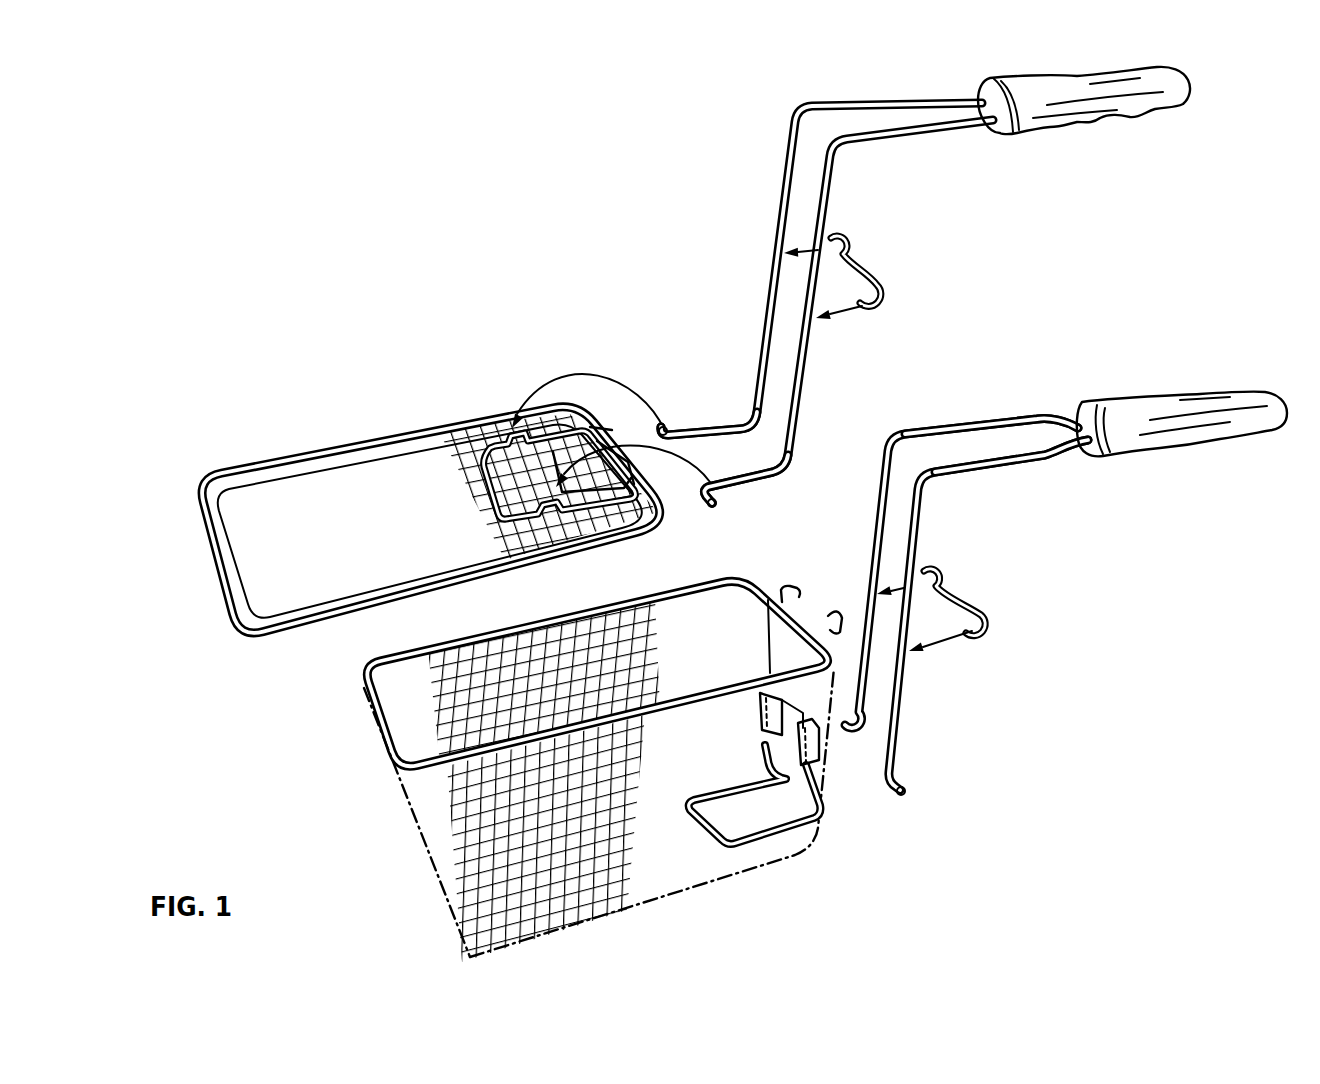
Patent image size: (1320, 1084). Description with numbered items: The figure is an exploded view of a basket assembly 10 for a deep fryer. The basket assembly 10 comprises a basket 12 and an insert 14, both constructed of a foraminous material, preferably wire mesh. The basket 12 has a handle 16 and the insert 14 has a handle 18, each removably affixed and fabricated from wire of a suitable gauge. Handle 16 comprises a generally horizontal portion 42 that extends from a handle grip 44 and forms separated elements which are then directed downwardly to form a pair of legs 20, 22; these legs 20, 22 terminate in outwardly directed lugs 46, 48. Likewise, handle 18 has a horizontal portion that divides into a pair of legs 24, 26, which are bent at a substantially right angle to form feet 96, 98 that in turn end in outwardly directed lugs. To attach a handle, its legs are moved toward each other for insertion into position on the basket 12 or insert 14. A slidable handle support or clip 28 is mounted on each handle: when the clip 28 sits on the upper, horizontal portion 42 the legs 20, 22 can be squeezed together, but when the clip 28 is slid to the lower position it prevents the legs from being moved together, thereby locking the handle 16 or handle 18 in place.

The basket assembly 10 is at (755, 548).
The basket 12 is at (659, 746).
The insert 14 is at (420, 392).
The handle 16 is at (1066, 579).
The handle 18 is at (924, 287).
The leg 20 is at (897, 706).
The leg 22 is at (866, 671).
The leg 24 is at (803, 405).
The leg 26 is at (765, 352).
The clip 28 is at (848, 238).
The portion 42 is at (1000, 447).
The handle grip 44 is at (1160, 408).
The lug 46 is at (790, 694).
The lug 48 is at (840, 744).
The foot 96 is at (736, 480).
The foot 98 is at (750, 420).